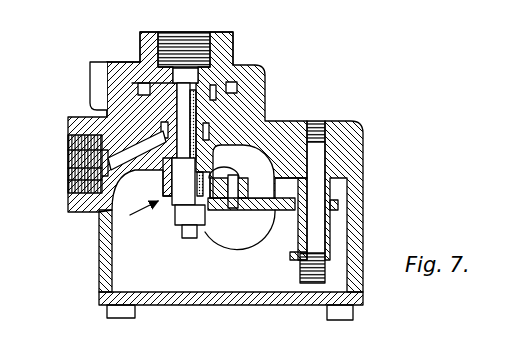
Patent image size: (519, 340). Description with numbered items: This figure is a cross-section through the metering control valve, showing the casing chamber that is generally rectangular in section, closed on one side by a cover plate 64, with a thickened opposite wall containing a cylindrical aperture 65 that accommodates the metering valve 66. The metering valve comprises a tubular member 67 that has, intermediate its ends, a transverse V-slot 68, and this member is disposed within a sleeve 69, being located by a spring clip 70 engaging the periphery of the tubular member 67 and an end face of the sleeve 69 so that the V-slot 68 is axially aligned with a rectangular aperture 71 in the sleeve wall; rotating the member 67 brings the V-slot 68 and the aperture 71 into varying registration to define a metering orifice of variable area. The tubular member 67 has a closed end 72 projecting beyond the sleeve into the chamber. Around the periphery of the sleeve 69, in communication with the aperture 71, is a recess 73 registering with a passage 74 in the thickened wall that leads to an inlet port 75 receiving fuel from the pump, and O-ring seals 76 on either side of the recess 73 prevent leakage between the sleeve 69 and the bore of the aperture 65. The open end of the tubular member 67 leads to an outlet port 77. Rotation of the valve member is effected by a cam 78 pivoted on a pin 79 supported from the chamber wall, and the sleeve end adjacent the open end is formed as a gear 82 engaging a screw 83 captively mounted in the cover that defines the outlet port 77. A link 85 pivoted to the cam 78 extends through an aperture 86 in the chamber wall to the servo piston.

The cover plate 64 is at (281, 300).
The cylindrical aperture 65 is at (205, 72).
The metering valve 66 is at (102, 221).
The tubular member 67 is at (184, 75).
The V-slot 68 is at (165, 180).
The sleeve 69 is at (214, 159).
The spring clip 70 is at (160, 78).
The rectangular aperture 71 is at (178, 128).
The closed end 72 is at (178, 203).
The recess 73 is at (208, 132).
The passage 74 is at (118, 157).
The inlet port 75 is at (100, 172).
The O-ring seals 76 is at (213, 102).
The outlet port 77 is at (230, 38).
The cam 78 is at (223, 193).
The pin 79 is at (315, 163).
The gear 82 is at (232, 92).
The screw 83 is at (97, 75).
The link 85 is at (220, 197).
The aperture 86 is at (247, 213).